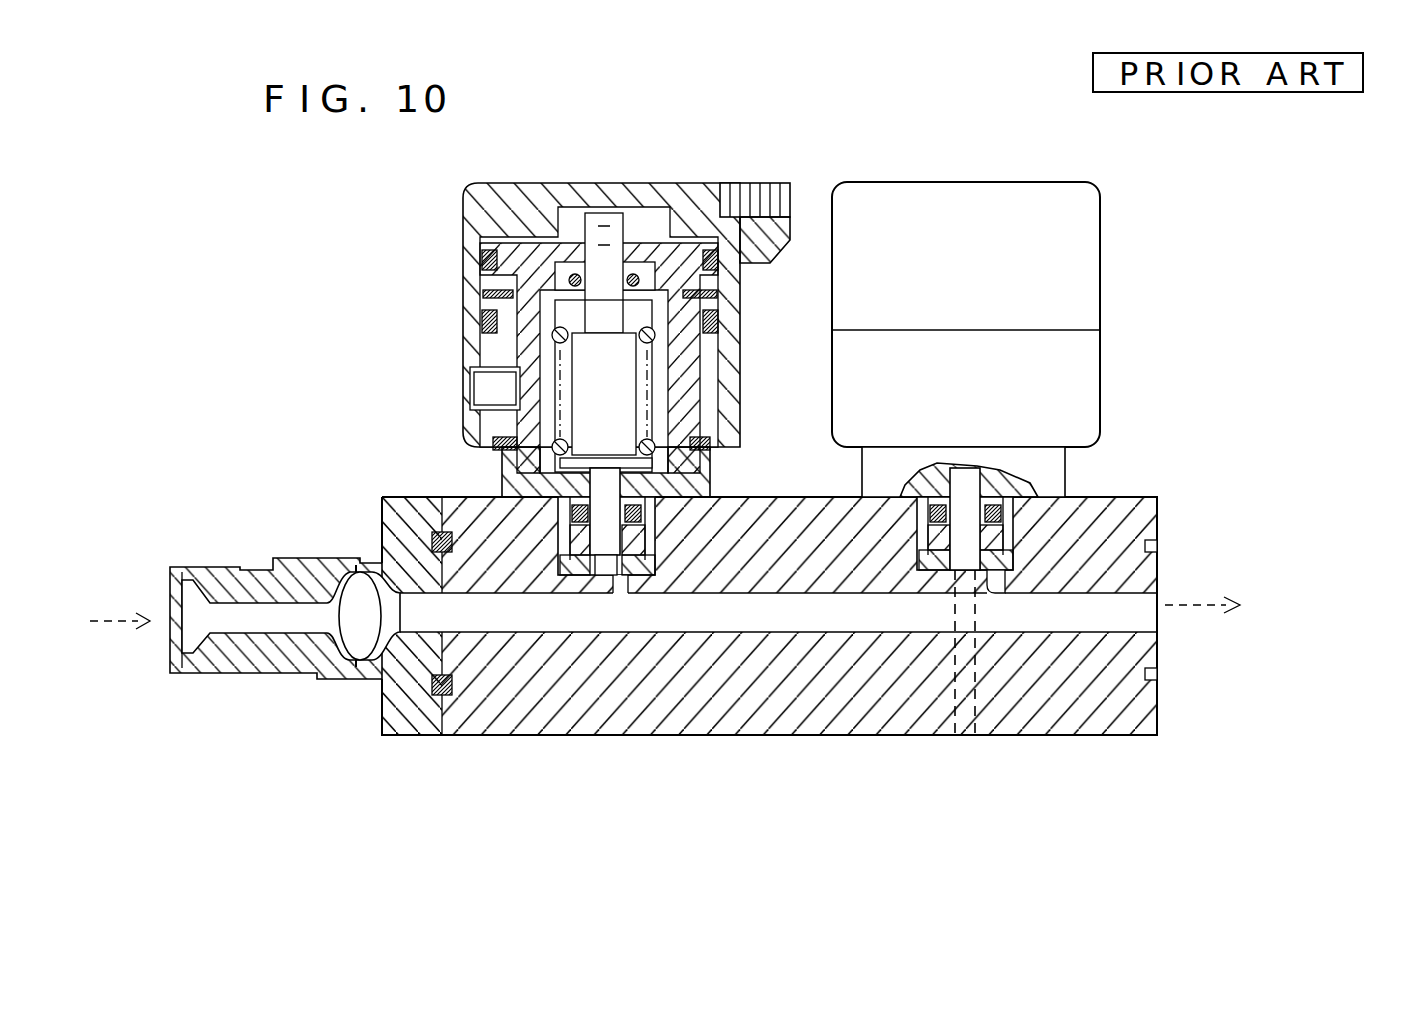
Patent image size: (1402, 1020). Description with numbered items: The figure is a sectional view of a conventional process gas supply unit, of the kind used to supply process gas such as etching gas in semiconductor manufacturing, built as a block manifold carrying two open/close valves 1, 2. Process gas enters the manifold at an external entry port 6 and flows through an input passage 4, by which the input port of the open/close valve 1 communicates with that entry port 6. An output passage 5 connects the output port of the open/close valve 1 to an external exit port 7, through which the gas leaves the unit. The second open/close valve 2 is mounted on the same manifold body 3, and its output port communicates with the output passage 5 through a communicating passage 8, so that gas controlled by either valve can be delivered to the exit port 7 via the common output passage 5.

The open/close valve 1 is at (672, 200).
The open/close valve 2 is at (1075, 207).
The base block 3 is at (1160, 705).
The input passage 4 is at (567, 620).
The output passage 5 is at (815, 620).
The external entry port 6 is at (272, 620).
The external exit port 7 is at (1190, 622).
The communicating passage 8 is at (1005, 596).